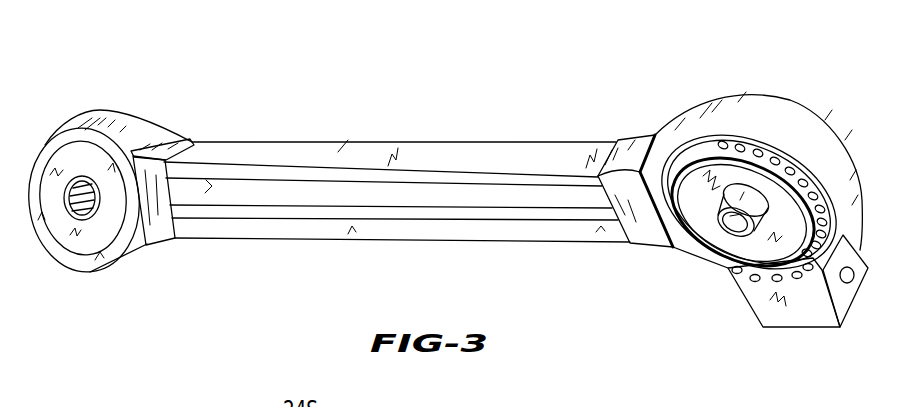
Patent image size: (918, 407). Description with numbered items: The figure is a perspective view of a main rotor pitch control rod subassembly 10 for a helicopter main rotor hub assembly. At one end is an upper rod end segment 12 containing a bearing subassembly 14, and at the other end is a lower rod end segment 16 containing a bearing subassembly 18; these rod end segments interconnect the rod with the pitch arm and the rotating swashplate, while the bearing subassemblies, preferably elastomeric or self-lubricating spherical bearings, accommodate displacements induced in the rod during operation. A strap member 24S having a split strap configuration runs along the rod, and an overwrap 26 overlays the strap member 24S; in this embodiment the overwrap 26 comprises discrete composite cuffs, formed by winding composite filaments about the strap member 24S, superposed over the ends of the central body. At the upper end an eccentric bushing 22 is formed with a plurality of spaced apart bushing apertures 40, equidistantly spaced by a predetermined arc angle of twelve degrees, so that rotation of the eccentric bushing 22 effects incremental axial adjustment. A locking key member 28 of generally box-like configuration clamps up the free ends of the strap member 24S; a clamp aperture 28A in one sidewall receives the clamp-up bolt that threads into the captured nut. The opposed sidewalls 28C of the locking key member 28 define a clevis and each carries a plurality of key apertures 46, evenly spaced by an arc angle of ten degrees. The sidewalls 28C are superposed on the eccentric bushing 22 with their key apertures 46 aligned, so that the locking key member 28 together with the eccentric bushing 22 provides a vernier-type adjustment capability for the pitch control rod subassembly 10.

The main rotor pitch control rod subassembly 10 is at (436, 108).
The upper rod end segment 12 is at (815, 70).
The bearing subassembly 14 is at (698, 208).
The lower rod end segment 16 is at (95, 93).
The bearing subassembly 18 is at (73, 165).
The eccentric bushing 22 is at (750, 143).
The strap member 24S is at (120, 117).
The overwrap 26 is at (170, 137).
The locking key member 28 is at (812, 347).
The clamp aperture 28A is at (848, 283).
The sidewalls 28C is at (760, 310).
The bushing apertures 40 is at (800, 177).
The key apertures 46 is at (752, 278).